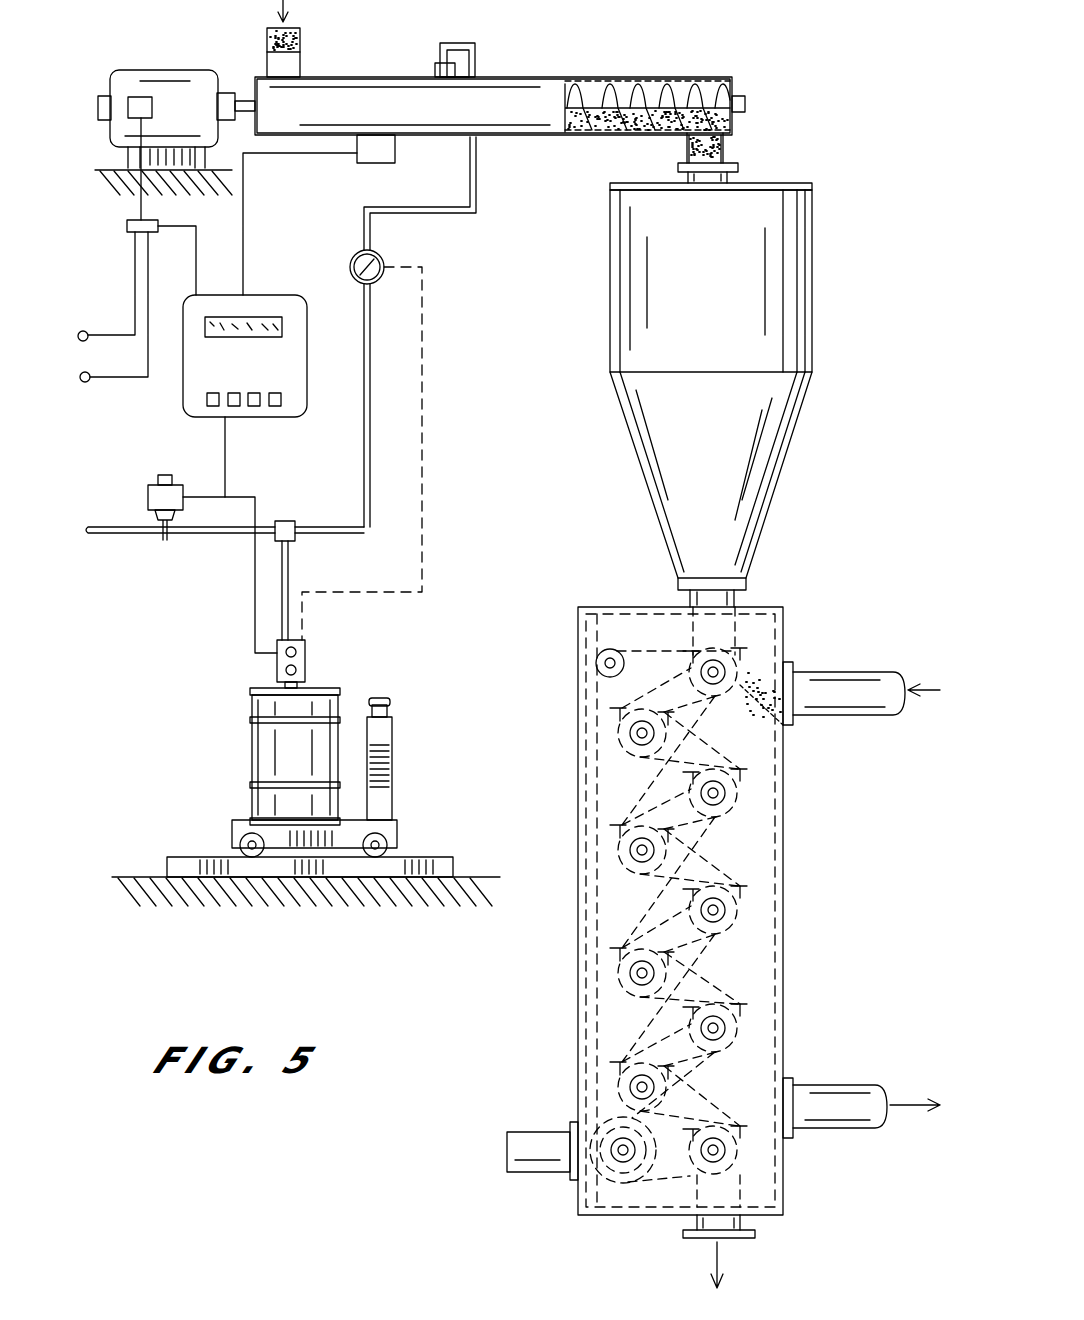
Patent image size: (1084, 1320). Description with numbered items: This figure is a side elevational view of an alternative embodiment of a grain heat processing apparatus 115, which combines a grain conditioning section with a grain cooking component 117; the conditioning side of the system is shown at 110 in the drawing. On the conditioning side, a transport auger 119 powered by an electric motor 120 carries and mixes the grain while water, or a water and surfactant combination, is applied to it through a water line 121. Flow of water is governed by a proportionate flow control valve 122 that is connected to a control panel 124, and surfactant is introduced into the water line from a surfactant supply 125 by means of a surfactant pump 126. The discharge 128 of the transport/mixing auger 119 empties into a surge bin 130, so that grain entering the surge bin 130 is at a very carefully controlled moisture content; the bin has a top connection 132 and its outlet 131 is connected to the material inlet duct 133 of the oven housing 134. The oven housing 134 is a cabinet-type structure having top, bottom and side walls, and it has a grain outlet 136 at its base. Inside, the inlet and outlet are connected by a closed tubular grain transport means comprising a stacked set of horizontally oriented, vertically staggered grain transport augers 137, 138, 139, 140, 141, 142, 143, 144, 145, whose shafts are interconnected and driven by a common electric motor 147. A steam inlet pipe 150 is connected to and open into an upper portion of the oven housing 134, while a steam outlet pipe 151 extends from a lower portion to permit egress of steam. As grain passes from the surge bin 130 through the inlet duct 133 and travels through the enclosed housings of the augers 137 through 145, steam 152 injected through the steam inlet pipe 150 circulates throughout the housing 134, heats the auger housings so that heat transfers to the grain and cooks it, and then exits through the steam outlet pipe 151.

The feed system 110 is at (495, 45).
The grain heat processing apparatus 115 is at (755, 92).
The grain cooking component 117 is at (800, 475).
The transport auger 119 is at (528, 90).
The electric motor 120 is at (170, 70).
The water line 121 is at (478, 186).
The proportionate flow control valve 122 is at (150, 497).
The control panel 124 is at (200, 380).
The surfactant supply 125 is at (335, 700).
The surfactant pump 126 is at (307, 658).
The discharge 128 is at (735, 146).
The surge bin 130 is at (780, 300).
The outlet 131 is at (725, 530).
The hopper top flange 132 is at (740, 175).
The material inlet duct 133 is at (733, 598).
The oven housing 134 is at (628, 605).
The grain outlet 136 is at (740, 1222).
The grain transport auger 137 is at (735, 668).
The grain transport auger 138 is at (625, 733).
The grain transport auger 139 is at (740, 797).
The grain transport auger 140 is at (625, 850).
The grain transport auger 141 is at (740, 903).
The grain transport auger 142 is at (625, 973).
The grain transport auger 143 is at (740, 1028).
The grain transport auger 144 is at (625, 1087).
The grain transport auger 145 is at (740, 1160).
The common electric motor 147 is at (530, 1178).
The steam inlet pipe 150 is at (855, 685).
The steam outlet pipe 151 is at (845, 1095).
The steam 152 is at (783, 722).